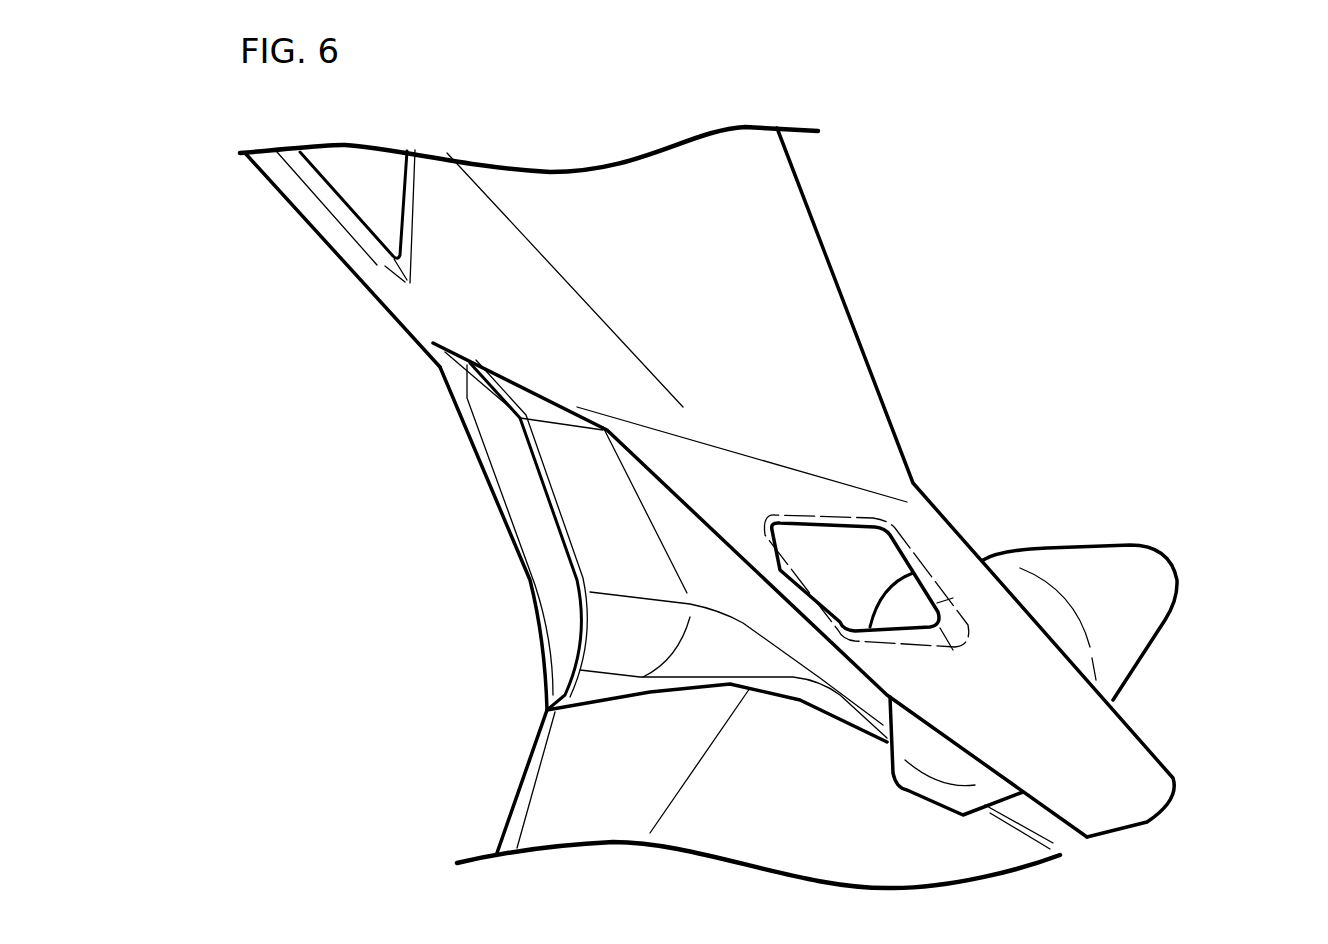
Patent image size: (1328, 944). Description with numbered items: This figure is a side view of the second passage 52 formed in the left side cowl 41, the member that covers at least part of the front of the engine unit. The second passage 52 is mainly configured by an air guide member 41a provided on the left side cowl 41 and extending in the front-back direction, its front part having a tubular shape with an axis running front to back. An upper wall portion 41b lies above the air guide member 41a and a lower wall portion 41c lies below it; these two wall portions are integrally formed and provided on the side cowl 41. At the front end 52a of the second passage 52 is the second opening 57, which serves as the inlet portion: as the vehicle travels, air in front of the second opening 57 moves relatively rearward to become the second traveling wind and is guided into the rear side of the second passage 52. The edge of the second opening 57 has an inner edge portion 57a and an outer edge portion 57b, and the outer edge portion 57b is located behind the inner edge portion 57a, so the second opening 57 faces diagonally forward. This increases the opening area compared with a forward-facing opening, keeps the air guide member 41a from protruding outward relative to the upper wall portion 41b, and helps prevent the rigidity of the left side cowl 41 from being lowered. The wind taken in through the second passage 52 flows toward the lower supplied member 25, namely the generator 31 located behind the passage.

The left side cowl 41 is at (398, 335).
The air guide member 41a is at (770, 617).
The upper wall portion 41b is at (807, 240).
The lower wall portion 41c is at (540, 813).
The second passage 52 is at (542, 536).
The front end of the second passage 52a is at (541, 657).
The second opening 57 is at (642, 710).
The inner edge portion 57a is at (488, 476).
The outer edge portion 57b is at (577, 582).
The generator 31 is at (1103, 680).
The lower supplied member 25 is at (1137, 632).